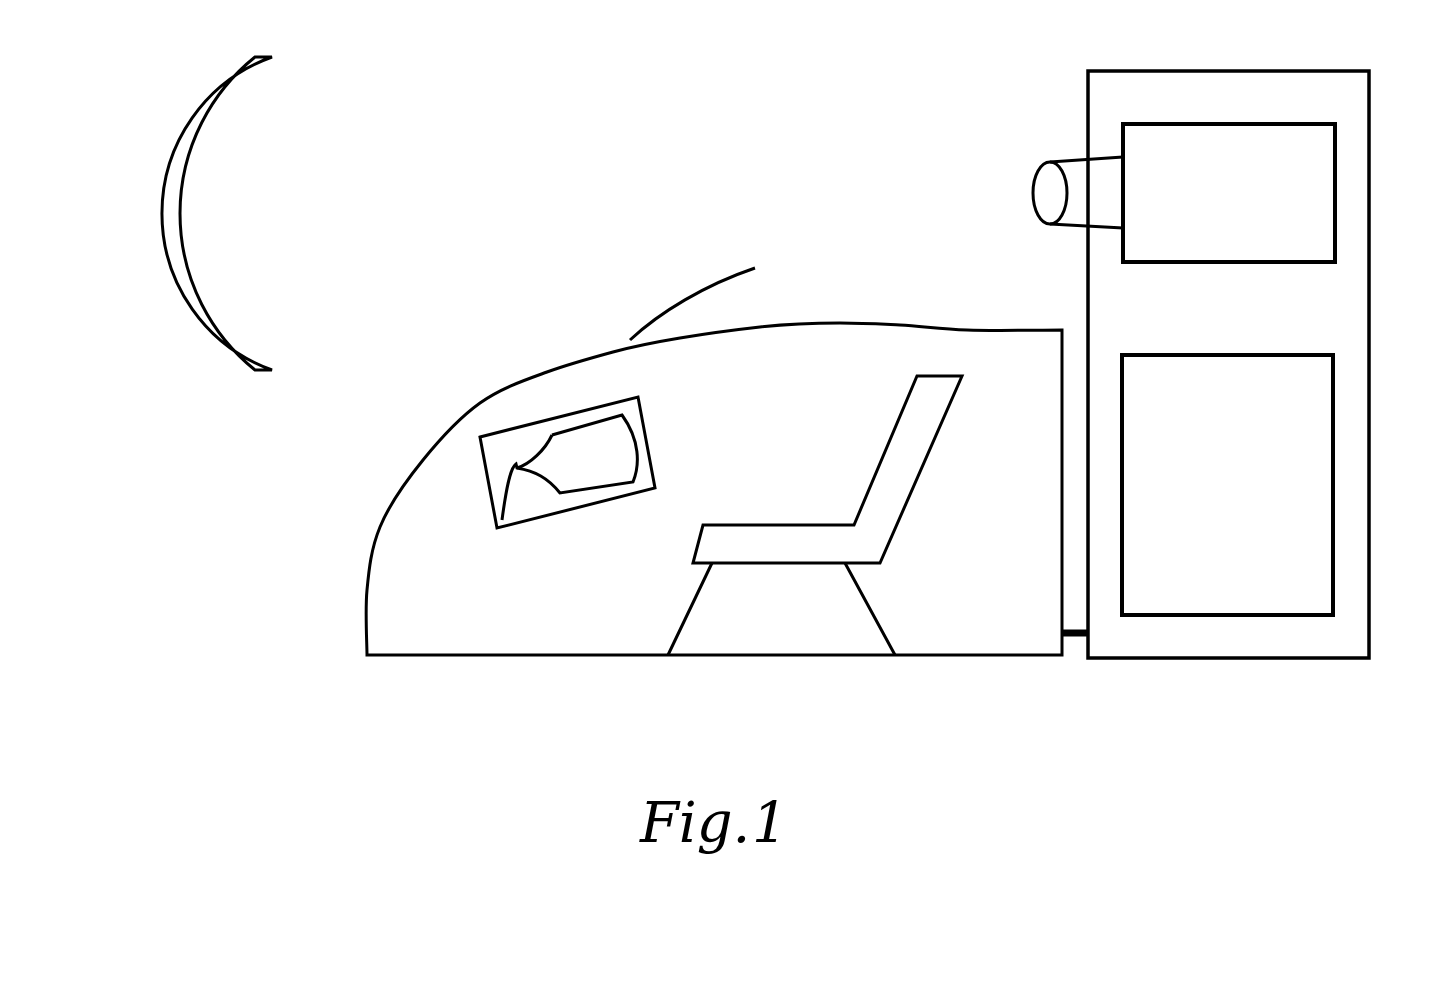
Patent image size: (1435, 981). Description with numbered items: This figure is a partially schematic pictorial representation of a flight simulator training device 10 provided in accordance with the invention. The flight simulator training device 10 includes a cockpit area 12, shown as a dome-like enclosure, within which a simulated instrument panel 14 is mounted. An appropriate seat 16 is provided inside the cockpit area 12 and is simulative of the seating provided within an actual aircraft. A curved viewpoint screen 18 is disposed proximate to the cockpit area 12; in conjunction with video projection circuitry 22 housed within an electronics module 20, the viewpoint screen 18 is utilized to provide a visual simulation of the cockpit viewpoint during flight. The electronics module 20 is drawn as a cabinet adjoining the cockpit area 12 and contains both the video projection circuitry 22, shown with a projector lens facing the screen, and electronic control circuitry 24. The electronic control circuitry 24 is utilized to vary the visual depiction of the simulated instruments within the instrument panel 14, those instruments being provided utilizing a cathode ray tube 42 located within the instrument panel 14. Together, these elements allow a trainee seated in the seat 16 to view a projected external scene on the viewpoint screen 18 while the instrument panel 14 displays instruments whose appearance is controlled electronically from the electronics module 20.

The flight simulator training device 10 is at (818, 217).
The cockpit area 12 is at (380, 532).
The simulated instrument panel 14 is at (625, 500).
The seat 16 is at (907, 497).
The viewpoint screen 18 is at (203, 326).
The electronics module 20 is at (1370, 312).
The video projection circuitry 22 is at (1263, 265).
The electronic control circuitry 24 is at (1248, 618).
The cathode ray tube 42 is at (547, 443).